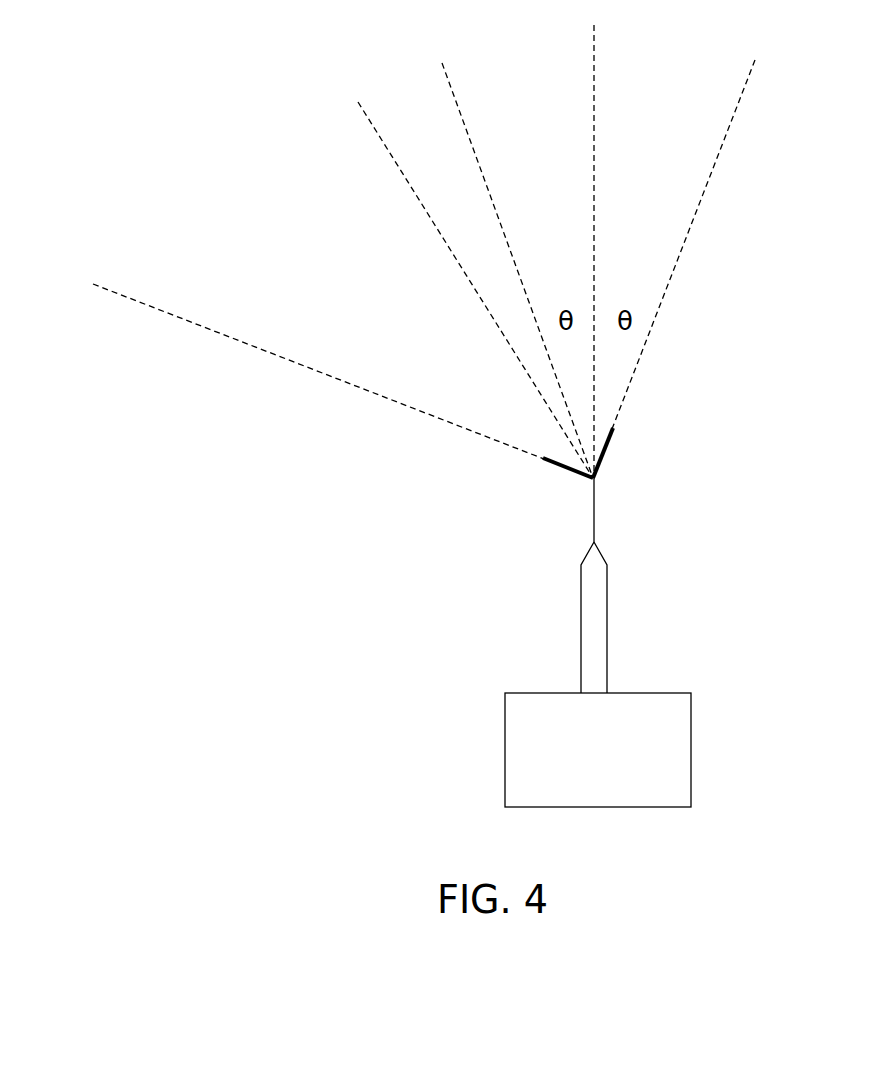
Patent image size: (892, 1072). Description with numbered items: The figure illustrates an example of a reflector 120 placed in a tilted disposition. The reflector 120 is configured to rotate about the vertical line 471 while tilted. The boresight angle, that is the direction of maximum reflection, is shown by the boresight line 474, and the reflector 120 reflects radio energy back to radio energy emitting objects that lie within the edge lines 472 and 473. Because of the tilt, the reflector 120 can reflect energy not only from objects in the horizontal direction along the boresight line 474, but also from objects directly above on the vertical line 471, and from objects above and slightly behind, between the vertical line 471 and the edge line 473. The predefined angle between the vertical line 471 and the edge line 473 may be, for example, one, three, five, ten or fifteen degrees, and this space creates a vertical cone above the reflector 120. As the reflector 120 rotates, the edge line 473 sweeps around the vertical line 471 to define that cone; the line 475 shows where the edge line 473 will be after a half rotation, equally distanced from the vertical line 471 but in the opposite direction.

The reflector 120 is at (603, 457).
The vertical line 471 is at (594, 125).
The edge line 472 is at (330, 376).
The edge line 473 is at (687, 232).
The boresight line 474 is at (410, 185).
The line 475 is at (463, 120).